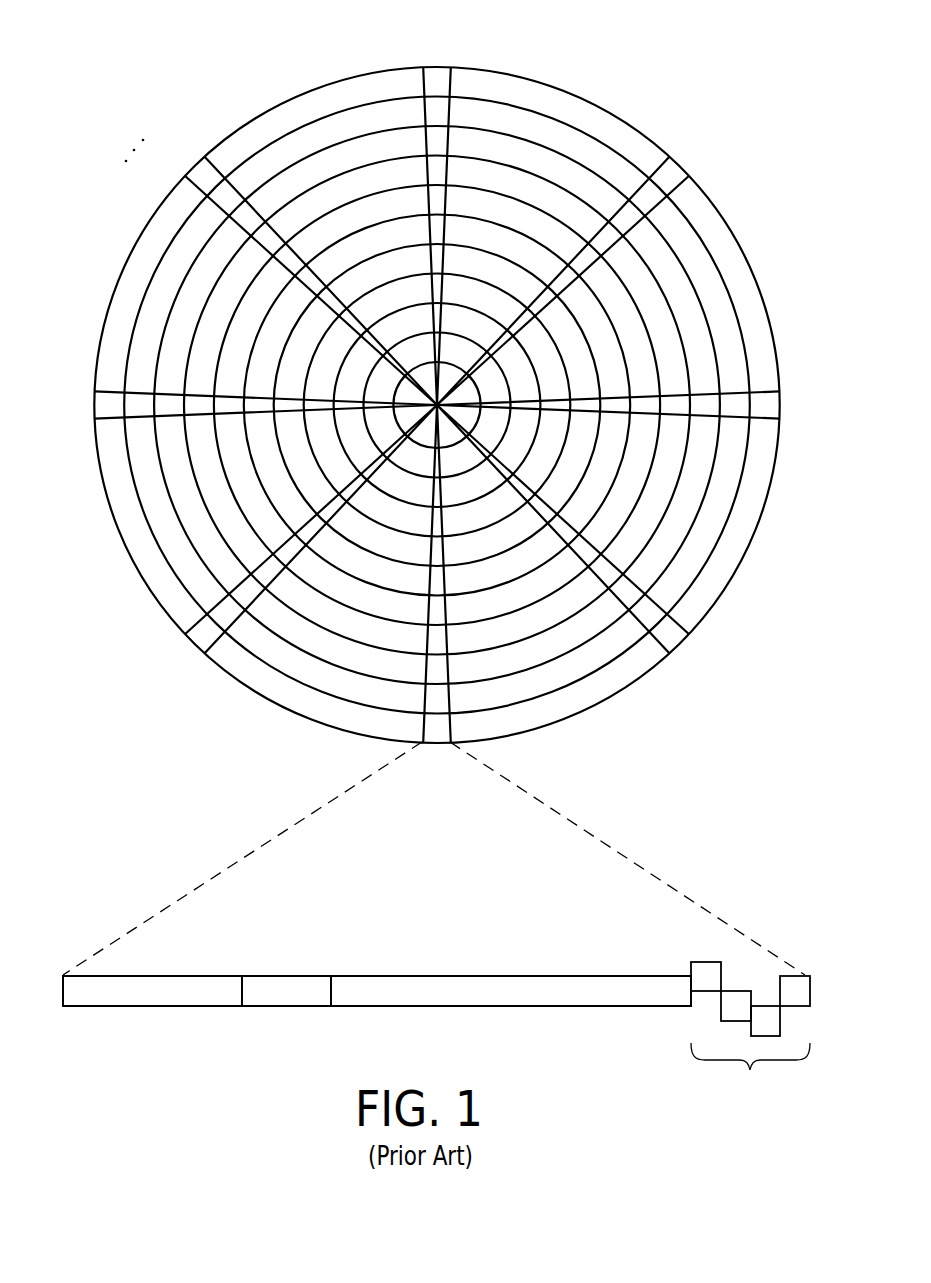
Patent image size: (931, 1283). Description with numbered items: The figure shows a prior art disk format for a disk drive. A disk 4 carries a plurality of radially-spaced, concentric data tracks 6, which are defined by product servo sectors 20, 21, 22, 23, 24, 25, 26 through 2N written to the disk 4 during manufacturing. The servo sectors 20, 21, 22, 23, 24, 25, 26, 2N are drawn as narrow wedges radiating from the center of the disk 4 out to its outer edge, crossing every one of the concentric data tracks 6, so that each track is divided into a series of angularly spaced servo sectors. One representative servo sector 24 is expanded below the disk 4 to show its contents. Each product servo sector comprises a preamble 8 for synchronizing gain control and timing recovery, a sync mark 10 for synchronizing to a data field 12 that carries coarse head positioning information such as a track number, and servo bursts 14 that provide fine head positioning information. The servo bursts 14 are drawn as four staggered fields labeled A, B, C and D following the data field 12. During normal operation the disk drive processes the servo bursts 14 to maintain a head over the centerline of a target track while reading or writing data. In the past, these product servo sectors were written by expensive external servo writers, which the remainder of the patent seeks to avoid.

The disk 4 is at (439, 414).
The data tracks 6 is at (578, 117).
The product servo sector 20 is at (438, 78).
The product servo sector 21 is at (672, 173).
The product servo sector 22 is at (772, 405).
The product servo sector 23 is at (672, 635).
The product servo sector 24 is at (287, 822).
The product servo sector 25 is at (200, 638).
The product servo sector 26 is at (98, 402).
The product servo sector 2N is at (281, 258).
The preamble 8 is at (132, 1006).
The sync mark 10 is at (285, 1006).
The data field 12 is at (497, 1006).
The servo bursts 14 is at (442, 997).